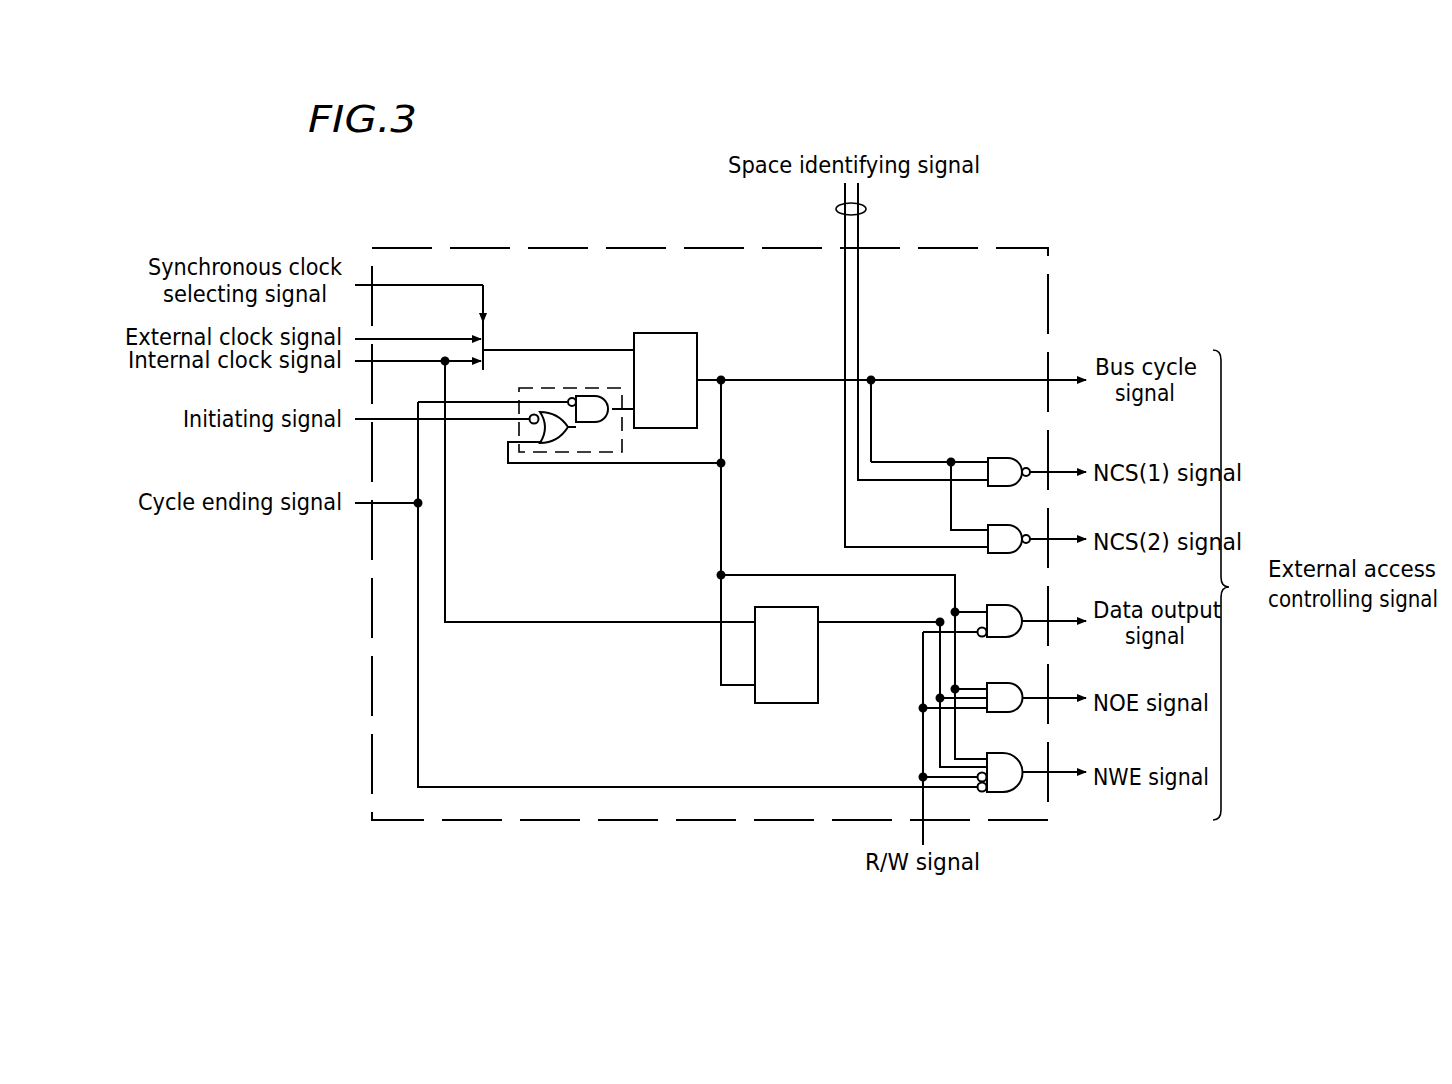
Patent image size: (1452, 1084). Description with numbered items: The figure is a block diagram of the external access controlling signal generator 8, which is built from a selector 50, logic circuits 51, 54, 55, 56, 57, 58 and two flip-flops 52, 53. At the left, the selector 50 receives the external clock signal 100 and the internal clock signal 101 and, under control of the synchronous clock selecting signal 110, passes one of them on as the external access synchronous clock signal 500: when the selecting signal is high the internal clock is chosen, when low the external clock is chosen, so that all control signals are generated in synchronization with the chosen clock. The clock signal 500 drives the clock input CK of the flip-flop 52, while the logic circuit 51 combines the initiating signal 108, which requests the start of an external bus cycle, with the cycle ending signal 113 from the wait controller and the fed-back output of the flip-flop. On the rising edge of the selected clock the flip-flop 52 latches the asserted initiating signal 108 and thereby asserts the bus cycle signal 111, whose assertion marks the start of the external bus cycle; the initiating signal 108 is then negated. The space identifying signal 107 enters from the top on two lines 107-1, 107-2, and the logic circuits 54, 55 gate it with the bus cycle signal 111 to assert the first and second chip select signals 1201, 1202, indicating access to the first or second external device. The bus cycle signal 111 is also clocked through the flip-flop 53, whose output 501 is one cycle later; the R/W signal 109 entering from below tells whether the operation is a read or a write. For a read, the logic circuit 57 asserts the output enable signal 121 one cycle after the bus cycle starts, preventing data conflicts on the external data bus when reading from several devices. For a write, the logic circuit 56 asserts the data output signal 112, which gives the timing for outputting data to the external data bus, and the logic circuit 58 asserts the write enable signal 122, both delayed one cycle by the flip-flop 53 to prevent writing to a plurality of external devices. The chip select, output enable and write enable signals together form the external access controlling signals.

The external access controlling signal generator 8 is at (1015, 250).
The synchronous clock selecting signal 110 is at (383, 262).
The selector 50 is at (485, 340).
The external clock signal 100 is at (380, 337).
The internal clock signal 101 is at (380, 365).
The external access synchronous clock signal 500 is at (565, 350).
The logic circuit 51 is at (584, 388).
The flip-flop 52 is at (698, 350).
The flip-flop 53 is at (805, 703).
The logic circuit 54 is at (1000, 457).
The logic circuit 55 is at (1000, 524).
The logic circuit 56 is at (1000, 605).
The logic circuit 57 is at (1000, 682).
The logic circuit 58 is at (1000, 753).
The space identifying signal 107 is at (878, 365).
The space identifying signal line 107-1 is at (858, 293).
The space identifying signal line 107-2 is at (845, 285).
The initiating signal 108 is at (375, 425).
The R/W signal 109 is at (923, 845).
The bus cycle signal 111 is at (976, 380).
The data output signal 112 is at (1057, 621).
The cycle ending signal 113 is at (378, 508).
The output enable signal 121 is at (1058, 698).
The write enable signal 122 is at (1058, 772).
The flip-flop output signal 501 is at (862, 625).
The chip select signal 1201 is at (1058, 472).
The chip select signal 1202 is at (1058, 539).